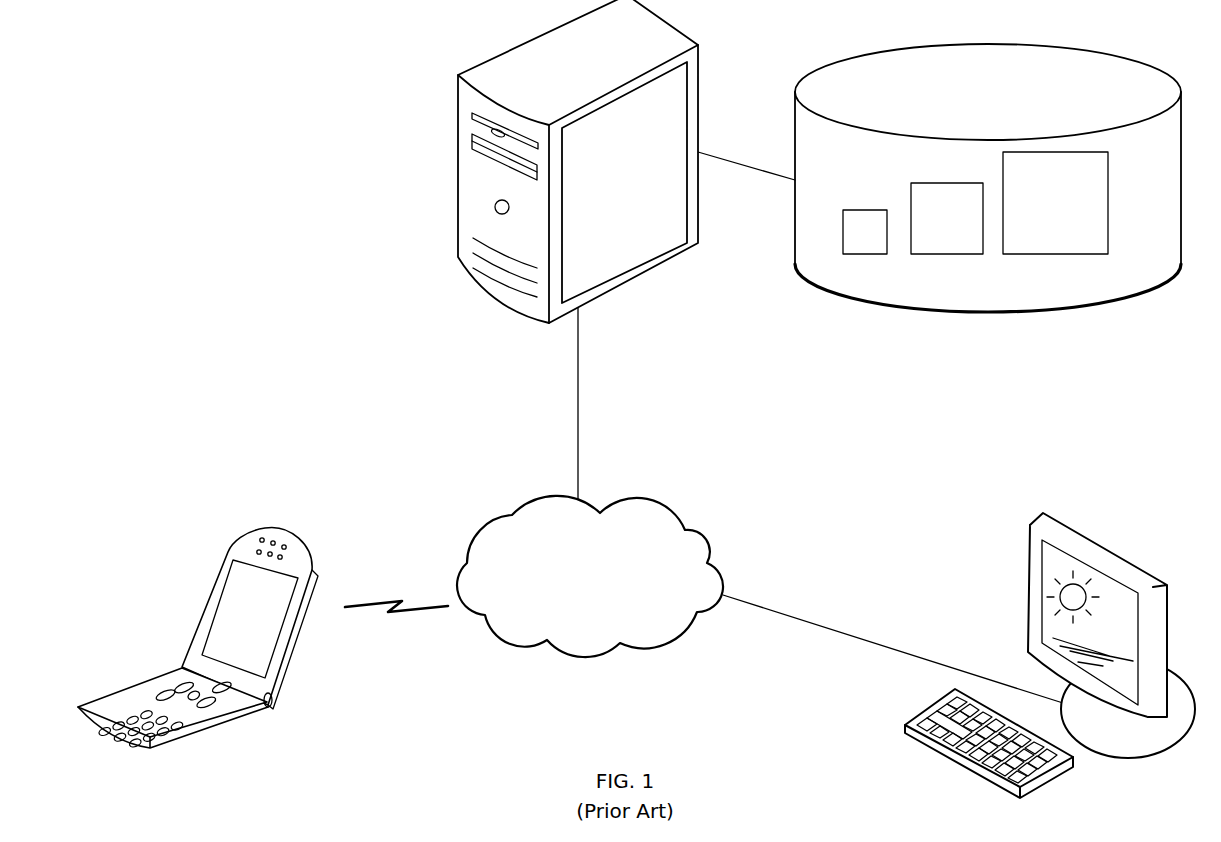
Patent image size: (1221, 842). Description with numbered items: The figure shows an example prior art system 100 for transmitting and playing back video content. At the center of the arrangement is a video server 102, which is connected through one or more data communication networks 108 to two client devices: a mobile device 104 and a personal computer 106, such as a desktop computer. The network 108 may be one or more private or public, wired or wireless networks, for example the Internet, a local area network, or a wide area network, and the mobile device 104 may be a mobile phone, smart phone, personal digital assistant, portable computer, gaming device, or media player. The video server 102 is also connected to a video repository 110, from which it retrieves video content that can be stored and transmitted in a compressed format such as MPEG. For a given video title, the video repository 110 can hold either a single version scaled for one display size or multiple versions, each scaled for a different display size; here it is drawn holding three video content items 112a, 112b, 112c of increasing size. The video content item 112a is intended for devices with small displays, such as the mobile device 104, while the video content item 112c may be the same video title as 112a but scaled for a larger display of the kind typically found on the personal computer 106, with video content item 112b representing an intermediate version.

The prior art system 100 is at (105, 98).
The video server 102 is at (482, 62).
The mobile device 104 is at (217, 570).
The personal computer 106 is at (1028, 543).
The data communication networks 108 is at (590, 576).
The video repository 110 is at (984, 195).
The video content item 112a is at (858, 254).
The video content item 112b is at (947, 254).
The video content item 112c is at (1047, 254).